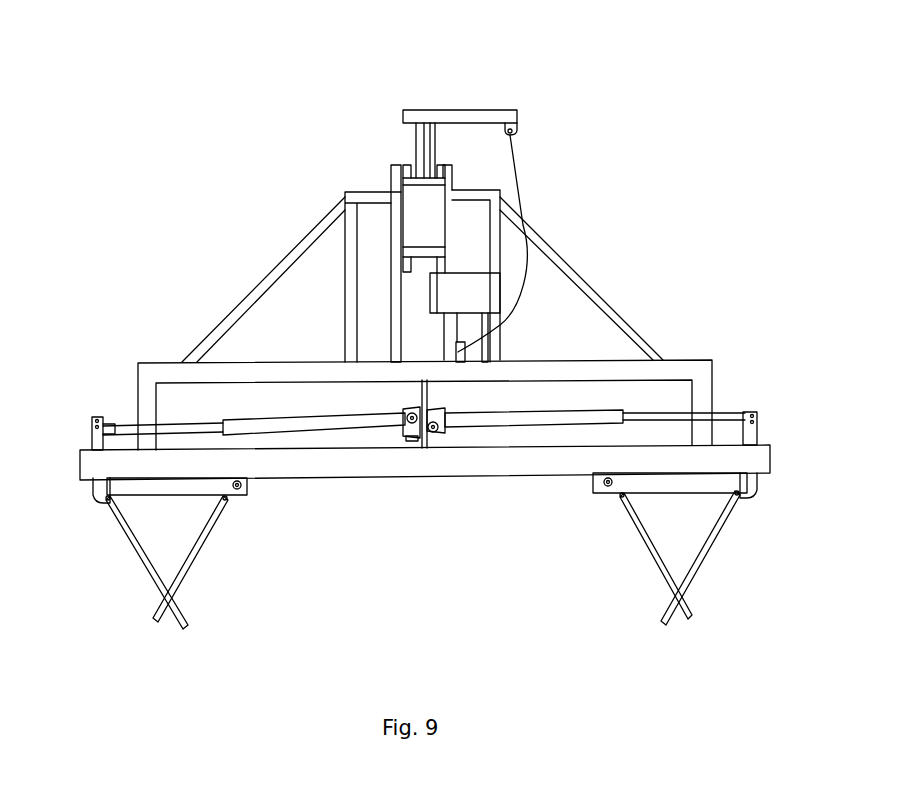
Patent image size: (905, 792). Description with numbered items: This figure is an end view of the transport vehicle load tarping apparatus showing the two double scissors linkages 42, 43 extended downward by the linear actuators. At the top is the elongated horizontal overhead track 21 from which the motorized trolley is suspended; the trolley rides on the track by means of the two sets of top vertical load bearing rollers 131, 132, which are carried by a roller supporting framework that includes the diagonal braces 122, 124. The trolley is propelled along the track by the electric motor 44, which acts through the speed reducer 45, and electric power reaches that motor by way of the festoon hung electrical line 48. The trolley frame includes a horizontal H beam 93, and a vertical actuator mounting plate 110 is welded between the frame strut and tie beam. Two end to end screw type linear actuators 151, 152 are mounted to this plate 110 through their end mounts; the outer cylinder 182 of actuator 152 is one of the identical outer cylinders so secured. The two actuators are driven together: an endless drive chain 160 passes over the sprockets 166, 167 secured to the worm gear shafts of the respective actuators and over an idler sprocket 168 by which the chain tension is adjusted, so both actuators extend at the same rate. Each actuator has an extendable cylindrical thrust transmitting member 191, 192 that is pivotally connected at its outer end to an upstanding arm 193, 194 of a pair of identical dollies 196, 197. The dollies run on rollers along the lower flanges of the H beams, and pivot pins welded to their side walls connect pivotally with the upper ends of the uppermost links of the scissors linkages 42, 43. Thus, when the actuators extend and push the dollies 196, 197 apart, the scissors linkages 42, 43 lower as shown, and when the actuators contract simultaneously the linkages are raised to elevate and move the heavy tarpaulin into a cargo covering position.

The overhead track 21 is at (393, 223).
The double scissors linkage 42 is at (707, 560).
The double scissors linkage 43 is at (148, 567).
The electric motor 44 is at (500, 334).
The speed reducer 45 is at (490, 287).
The festoon hung electrical line 48 is at (518, 168).
The H beam 93 is at (428, 478).
The vertical actuator mounting plate 110 is at (405, 420).
The diagonal brace 122 is at (583, 275).
The diagonal brace 124 is at (290, 248).
The top vertical load bearing roller 131 is at (407, 160).
The top vertical load bearing roller 132 is at (437, 112).
The screw type linear actuator 151 is at (610, 410).
The screw type linear actuator 152 is at (307, 427).
The endless drive chain 160 is at (442, 408).
The sprocket 166 is at (408, 428).
The sprocket 167 is at (440, 432).
The idler sprocket 168 is at (410, 438).
The outer cylinder 182 is at (243, 420).
The extendable cylindrical thrust transmitting member 191 is at (730, 412).
The extendable cylindrical thrust transmitting member 192 is at (120, 428).
The upstanding arm 193 is at (757, 437).
The upstanding arm 194 is at (97, 415).
The dolly 196 is at (162, 497).
The dolly 197 is at (695, 492).